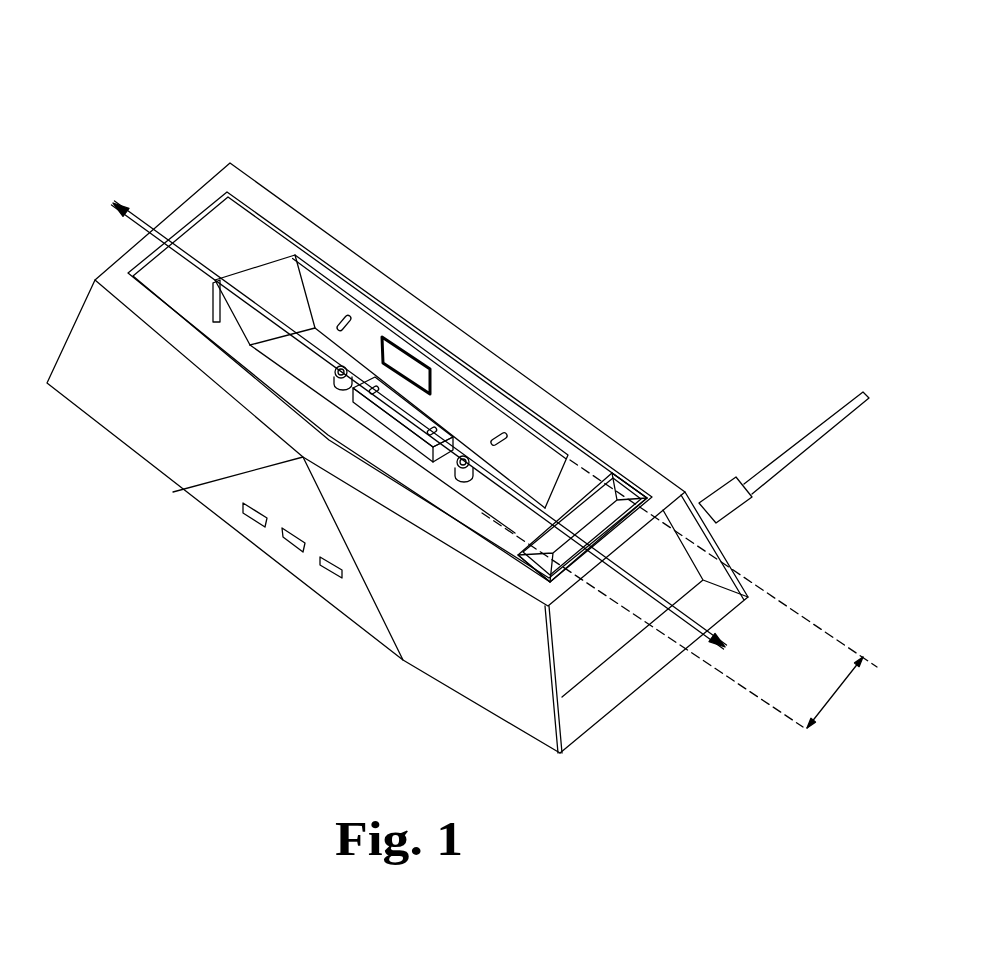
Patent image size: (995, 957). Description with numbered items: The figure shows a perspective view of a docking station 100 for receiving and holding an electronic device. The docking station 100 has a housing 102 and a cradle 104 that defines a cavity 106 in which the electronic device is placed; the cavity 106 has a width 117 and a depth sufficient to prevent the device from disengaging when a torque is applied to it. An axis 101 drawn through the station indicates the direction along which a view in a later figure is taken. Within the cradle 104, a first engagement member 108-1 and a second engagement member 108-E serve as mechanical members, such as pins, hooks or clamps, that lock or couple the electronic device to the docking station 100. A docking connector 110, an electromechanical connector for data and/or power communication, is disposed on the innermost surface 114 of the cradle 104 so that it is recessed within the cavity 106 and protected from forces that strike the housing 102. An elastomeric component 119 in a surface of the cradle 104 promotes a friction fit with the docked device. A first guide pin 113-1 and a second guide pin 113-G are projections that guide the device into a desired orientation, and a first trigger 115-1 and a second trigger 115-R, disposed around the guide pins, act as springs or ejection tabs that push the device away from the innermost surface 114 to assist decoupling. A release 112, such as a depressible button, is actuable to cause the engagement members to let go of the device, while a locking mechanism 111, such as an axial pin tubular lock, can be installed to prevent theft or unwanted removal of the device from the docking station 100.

The docking station 100 is at (148, 67).
The axis 101 is at (399, 417).
The housing 102 is at (230, 163).
The cradle 104 is at (340, 282).
The cavity 106 is at (285, 297).
The first engagement member 108-1 is at (352, 328).
The second engagement member 108-E is at (502, 434).
The docking connector 110 is at (407, 413).
The locking mechanism 111 is at (727, 523).
The release 112 is at (610, 528).
The first guide pin 113-1 is at (337, 374).
The second guide pin 113-G is at (461, 468).
The innermost surface 114 is at (295, 353).
The first trigger 115-1 is at (343, 393).
The second trigger 115-R is at (467, 483).
The width 117 is at (679, 594).
The elastomeric component 119 is at (420, 348).